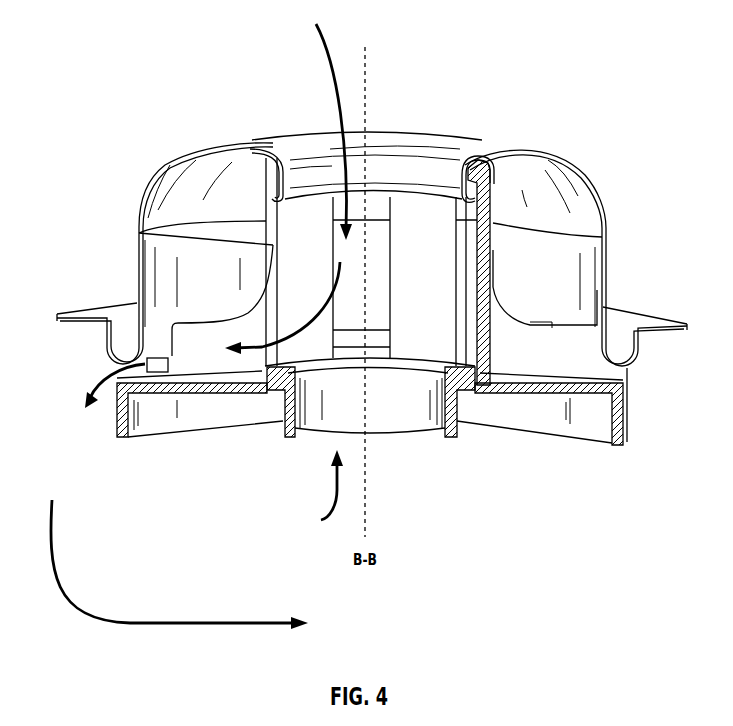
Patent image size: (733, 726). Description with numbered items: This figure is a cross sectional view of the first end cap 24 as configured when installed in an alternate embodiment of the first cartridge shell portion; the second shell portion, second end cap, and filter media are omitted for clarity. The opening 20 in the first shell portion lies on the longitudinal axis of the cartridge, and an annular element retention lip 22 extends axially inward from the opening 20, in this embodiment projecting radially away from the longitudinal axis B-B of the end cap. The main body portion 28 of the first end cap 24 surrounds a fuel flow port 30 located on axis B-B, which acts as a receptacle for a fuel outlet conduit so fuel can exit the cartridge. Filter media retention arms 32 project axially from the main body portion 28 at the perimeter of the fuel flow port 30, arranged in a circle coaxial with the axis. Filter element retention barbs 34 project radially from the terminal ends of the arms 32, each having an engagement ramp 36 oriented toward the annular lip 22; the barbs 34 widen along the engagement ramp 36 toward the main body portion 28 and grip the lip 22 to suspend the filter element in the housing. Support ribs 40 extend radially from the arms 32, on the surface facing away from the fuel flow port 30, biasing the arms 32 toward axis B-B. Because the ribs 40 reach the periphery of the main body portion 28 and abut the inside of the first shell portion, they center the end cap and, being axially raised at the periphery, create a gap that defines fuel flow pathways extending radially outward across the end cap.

The opening 20 is at (407, 232).
The annular element retention lip 22 is at (273, 187).
The first end cap 24 is at (92, 423).
The main body portion 28 is at (148, 358).
The fuel flow port 30 is at (389, 377).
The filter media retention arms 32 is at (139, 233).
The filter element retention barbs 34 is at (285, 172).
The engagement ramp 36 is at (463, 188).
The support ribs 40 is at (210, 350).